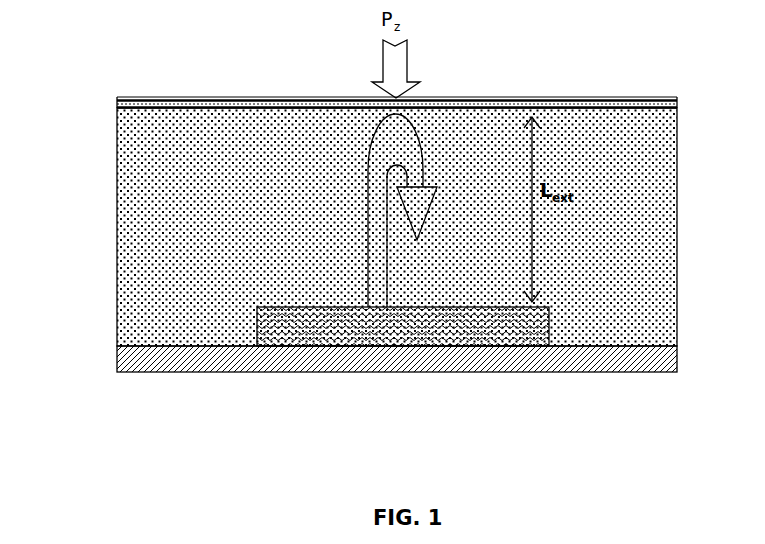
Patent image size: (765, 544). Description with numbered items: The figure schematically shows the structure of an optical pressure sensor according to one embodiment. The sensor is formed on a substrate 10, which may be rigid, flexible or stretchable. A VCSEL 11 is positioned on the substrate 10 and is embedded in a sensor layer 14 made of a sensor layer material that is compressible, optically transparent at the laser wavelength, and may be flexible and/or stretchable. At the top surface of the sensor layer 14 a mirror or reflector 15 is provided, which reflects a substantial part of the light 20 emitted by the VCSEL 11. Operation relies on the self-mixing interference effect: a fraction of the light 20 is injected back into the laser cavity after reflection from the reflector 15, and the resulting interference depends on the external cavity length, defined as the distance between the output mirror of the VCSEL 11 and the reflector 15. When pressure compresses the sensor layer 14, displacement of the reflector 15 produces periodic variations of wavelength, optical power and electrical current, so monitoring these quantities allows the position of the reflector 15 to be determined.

The substrate 10 is at (136, 362).
The VCSEL 11 is at (481, 325).
The sensor layer 14 is at (140, 198).
The reflector 15 is at (187, 99).
The light 20 is at (368, 209).